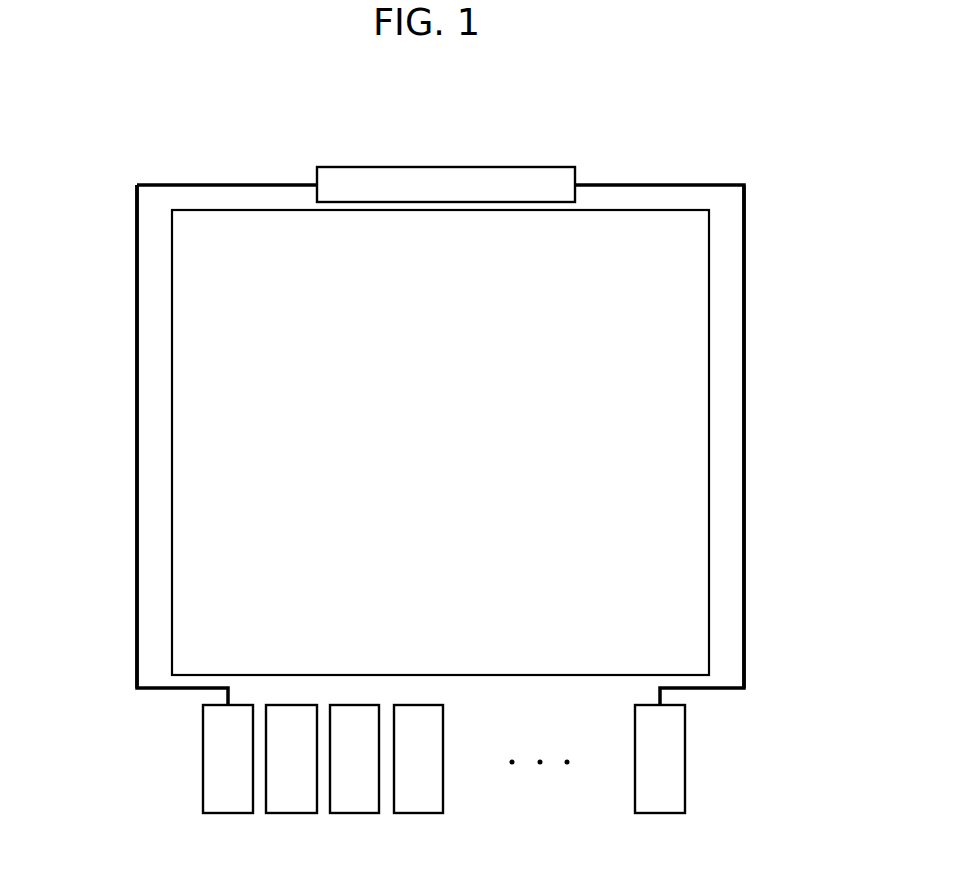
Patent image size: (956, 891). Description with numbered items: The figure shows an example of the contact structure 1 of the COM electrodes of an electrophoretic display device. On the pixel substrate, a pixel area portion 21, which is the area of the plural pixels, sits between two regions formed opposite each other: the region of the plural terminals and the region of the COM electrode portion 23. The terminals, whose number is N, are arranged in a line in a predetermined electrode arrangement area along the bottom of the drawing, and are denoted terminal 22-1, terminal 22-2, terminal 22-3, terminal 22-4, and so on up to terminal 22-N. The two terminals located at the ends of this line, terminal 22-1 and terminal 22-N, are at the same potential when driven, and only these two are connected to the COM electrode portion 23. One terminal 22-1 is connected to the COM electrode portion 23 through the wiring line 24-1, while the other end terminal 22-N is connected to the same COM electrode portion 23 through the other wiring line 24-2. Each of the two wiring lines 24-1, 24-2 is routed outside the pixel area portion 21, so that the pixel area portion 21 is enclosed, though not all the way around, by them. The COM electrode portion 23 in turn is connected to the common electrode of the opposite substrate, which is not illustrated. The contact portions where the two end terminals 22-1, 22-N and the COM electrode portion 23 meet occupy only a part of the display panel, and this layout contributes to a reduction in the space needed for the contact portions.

The contact structure 1 is at (710, 129).
The pixel area portion 21 is at (562, 677).
The terminal 22-1 is at (224, 813).
The terminal 22-2 is at (288, 813).
The terminal 22-3 is at (351, 813).
The terminal 22-4 is at (414, 813).
The terminal 22-N is at (661, 813).
The COM electrode portion 23 is at (548, 167).
The wiring line 24-1 is at (137, 428).
The wiring line 24-2 is at (746, 428).